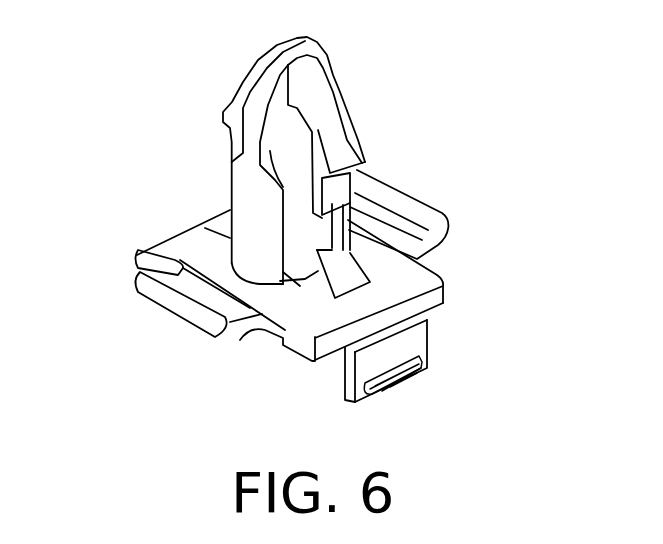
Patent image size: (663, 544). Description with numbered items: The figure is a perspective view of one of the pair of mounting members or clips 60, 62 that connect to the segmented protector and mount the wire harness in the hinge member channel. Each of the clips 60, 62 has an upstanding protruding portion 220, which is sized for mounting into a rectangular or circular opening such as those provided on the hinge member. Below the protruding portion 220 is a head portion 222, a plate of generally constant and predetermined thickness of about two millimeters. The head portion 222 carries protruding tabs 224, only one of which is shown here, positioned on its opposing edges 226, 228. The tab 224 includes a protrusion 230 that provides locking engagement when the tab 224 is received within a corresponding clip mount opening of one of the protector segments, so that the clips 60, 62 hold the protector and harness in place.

The clip 60 is at (387, 167).
The clip 62 is at (387, 167).
The protruding portion 220 is at (245, 142).
The head portion 222 is at (290, 312).
The protruding tab 224 is at (410, 340).
The opposing edge 226 is at (417, 287).
The opposing edge 228 is at (173, 233).
The protrusion 230 is at (400, 382).